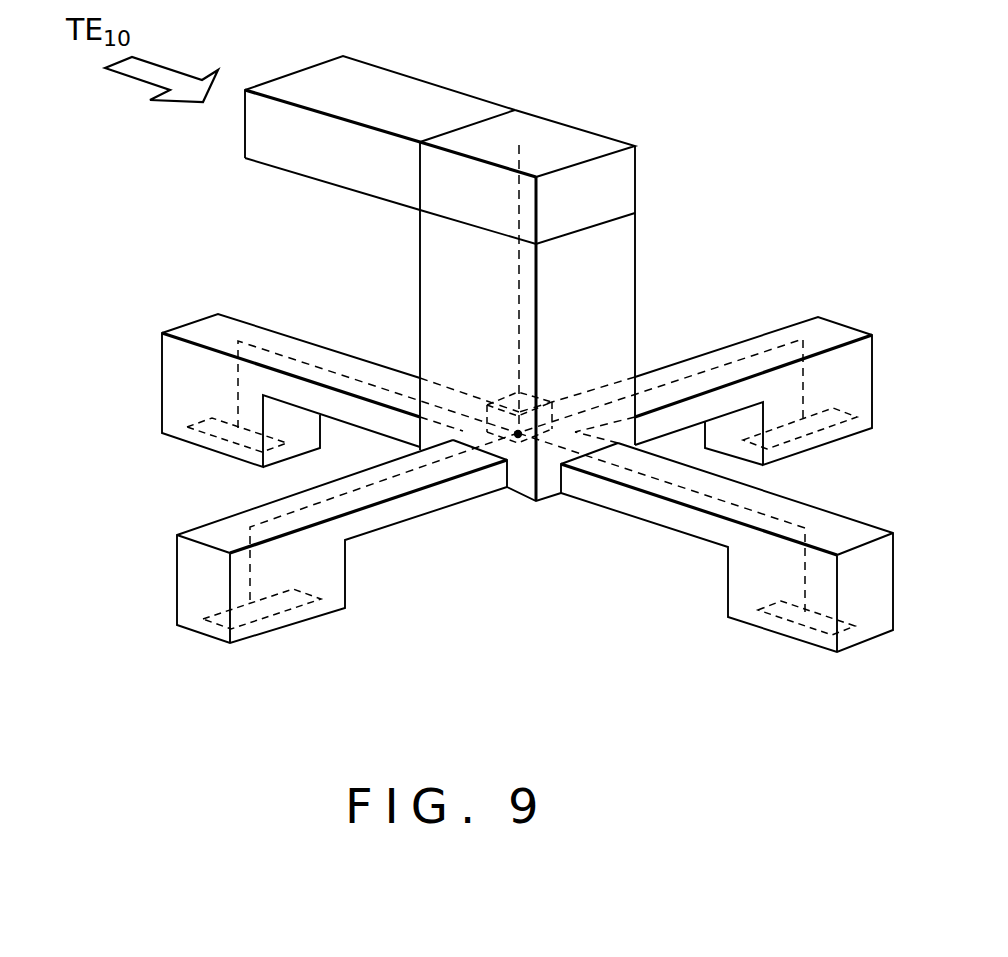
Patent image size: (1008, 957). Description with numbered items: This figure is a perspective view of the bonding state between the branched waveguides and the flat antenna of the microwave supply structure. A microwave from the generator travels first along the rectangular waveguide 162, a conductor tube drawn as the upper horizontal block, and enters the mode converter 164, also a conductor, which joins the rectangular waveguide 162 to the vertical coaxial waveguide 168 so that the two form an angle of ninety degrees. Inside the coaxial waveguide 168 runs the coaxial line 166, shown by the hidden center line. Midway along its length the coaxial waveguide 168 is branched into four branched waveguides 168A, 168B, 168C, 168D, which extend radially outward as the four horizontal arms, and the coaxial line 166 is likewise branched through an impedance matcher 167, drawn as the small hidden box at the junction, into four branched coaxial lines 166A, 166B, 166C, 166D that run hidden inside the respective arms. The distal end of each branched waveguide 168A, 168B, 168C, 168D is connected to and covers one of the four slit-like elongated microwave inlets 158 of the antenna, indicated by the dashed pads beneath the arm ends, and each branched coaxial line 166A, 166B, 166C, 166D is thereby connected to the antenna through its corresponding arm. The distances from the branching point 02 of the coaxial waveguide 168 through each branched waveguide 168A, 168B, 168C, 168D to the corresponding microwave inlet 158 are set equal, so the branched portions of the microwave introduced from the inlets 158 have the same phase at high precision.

The rectangular waveguide 162 is at (480, 98).
The mode converter 164 is at (598, 133).
The coaxial waveguide 168 is at (638, 237).
The coaxial line 166 is at (518, 282).
The impedance matcher 167 is at (552, 405).
The branching point 02 is at (518, 437).
The branched waveguide 168A is at (448, 507).
The branched waveguide 168B is at (682, 533).
The branched waveguide 168C is at (740, 343).
The branched waveguide 168D is at (341, 353).
The branched coaxial line 166A is at (370, 485).
The branched coaxial line 166B is at (660, 482).
The branched coaxial line 166C is at (803, 339).
The branched coaxial line 166D is at (270, 350).
The microwave inlet 158 is at (212, 437).